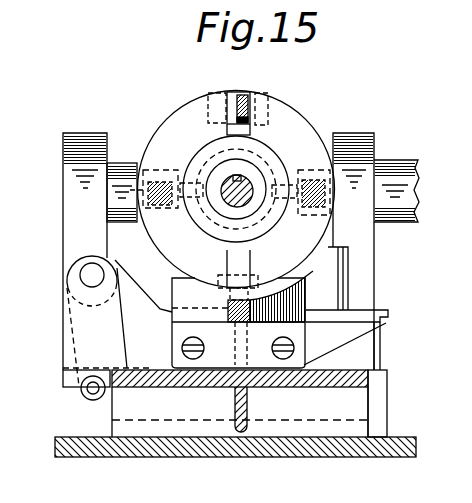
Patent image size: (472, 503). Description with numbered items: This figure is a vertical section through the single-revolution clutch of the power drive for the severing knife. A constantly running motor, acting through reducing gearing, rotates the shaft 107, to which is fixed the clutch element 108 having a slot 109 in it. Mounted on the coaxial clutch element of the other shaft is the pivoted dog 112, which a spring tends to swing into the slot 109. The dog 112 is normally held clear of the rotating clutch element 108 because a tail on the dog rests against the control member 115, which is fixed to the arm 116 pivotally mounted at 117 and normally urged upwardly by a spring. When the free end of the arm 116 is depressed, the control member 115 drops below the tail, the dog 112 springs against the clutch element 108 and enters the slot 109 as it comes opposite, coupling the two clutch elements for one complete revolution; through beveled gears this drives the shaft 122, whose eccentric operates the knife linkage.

The shaft 107 is at (248, 180).
The clutch element 108 is at (309, 117).
The slot 109 is at (222, 90).
The pivoted dog 112 is at (243, 112).
The control member 115 is at (302, 292).
The arm 116 is at (379, 325).
The pivot 117 is at (88, 273).
The shaft 122 is at (408, 197).